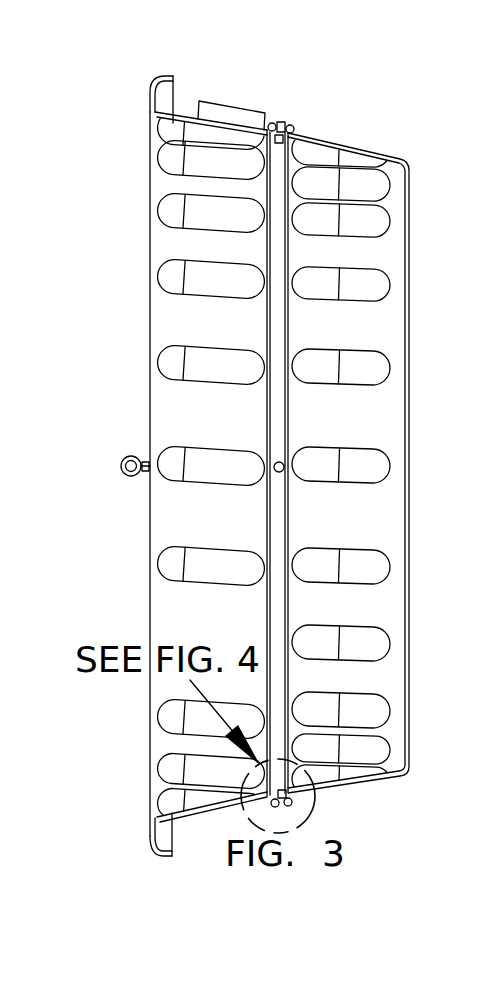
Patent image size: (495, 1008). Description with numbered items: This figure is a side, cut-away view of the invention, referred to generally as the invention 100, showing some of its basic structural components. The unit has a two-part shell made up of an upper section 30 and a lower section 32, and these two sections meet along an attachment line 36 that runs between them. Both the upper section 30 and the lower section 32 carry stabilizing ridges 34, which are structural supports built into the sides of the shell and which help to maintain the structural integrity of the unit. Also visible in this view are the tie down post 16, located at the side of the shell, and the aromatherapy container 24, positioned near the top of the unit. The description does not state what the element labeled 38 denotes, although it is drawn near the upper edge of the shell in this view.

The invention 100 is at (365, 118).
The upper section 30 is at (148, 307).
The lower section 32 is at (412, 307).
The stabilizing ridges 34 is at (160, 212).
The attachment line 36 is at (277, 488).
The rolled lip 38 is at (157, 76).
The aromatherapy container 24 is at (247, 113).
The tie down post 16 is at (123, 473).